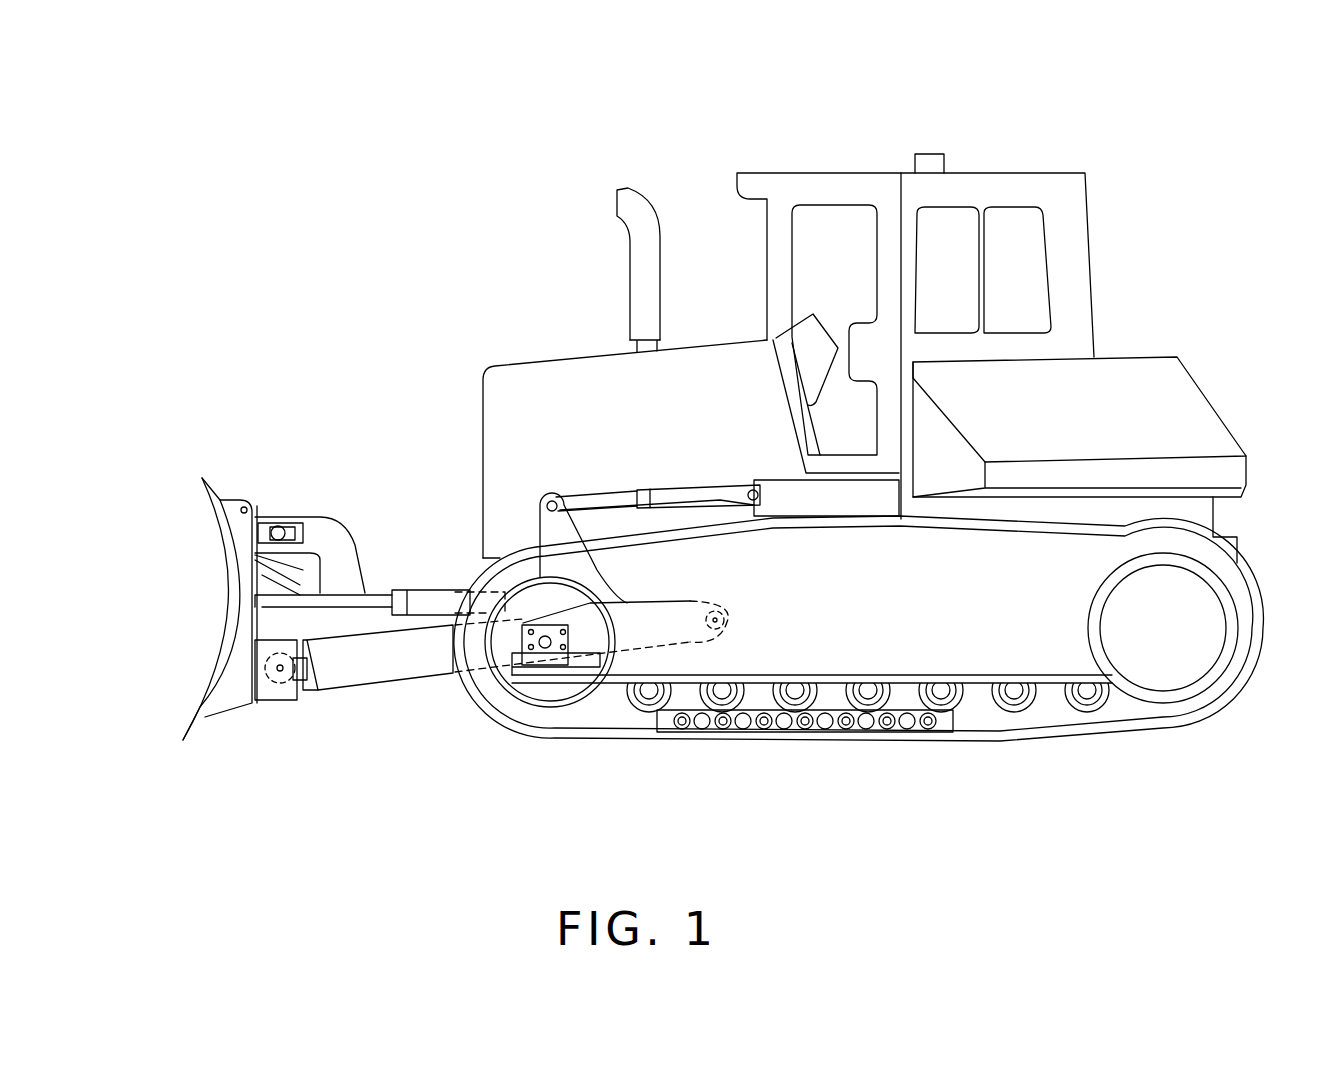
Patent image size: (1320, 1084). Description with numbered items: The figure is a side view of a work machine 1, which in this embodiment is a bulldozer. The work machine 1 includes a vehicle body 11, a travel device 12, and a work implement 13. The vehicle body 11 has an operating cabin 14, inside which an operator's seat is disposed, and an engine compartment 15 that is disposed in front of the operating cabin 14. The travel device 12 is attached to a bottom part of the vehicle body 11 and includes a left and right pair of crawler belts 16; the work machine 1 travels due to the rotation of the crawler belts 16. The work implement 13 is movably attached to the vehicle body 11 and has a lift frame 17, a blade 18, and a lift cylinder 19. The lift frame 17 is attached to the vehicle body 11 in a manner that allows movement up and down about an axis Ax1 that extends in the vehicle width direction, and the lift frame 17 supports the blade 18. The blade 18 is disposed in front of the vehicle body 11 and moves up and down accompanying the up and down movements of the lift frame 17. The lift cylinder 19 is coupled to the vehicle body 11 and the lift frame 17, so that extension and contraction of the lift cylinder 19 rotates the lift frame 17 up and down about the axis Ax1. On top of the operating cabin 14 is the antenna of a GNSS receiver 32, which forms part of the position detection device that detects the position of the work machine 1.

The work machine 1 is at (268, 152).
The vehicle body 11 is at (577, 262).
The travel device 12 is at (1133, 743).
The work implement 13 is at (335, 455).
The operating cabin 14 is at (784, 192).
The engine compartment 15 is at (707, 378).
The crawler belts 16 is at (998, 742).
The lift frame 17 is at (403, 670).
The blade 18 is at (237, 552).
The lift cylinder 19 is at (680, 500).
The GNSS receiver 32 is at (934, 153).
The axis Ax1 is at (712, 632).